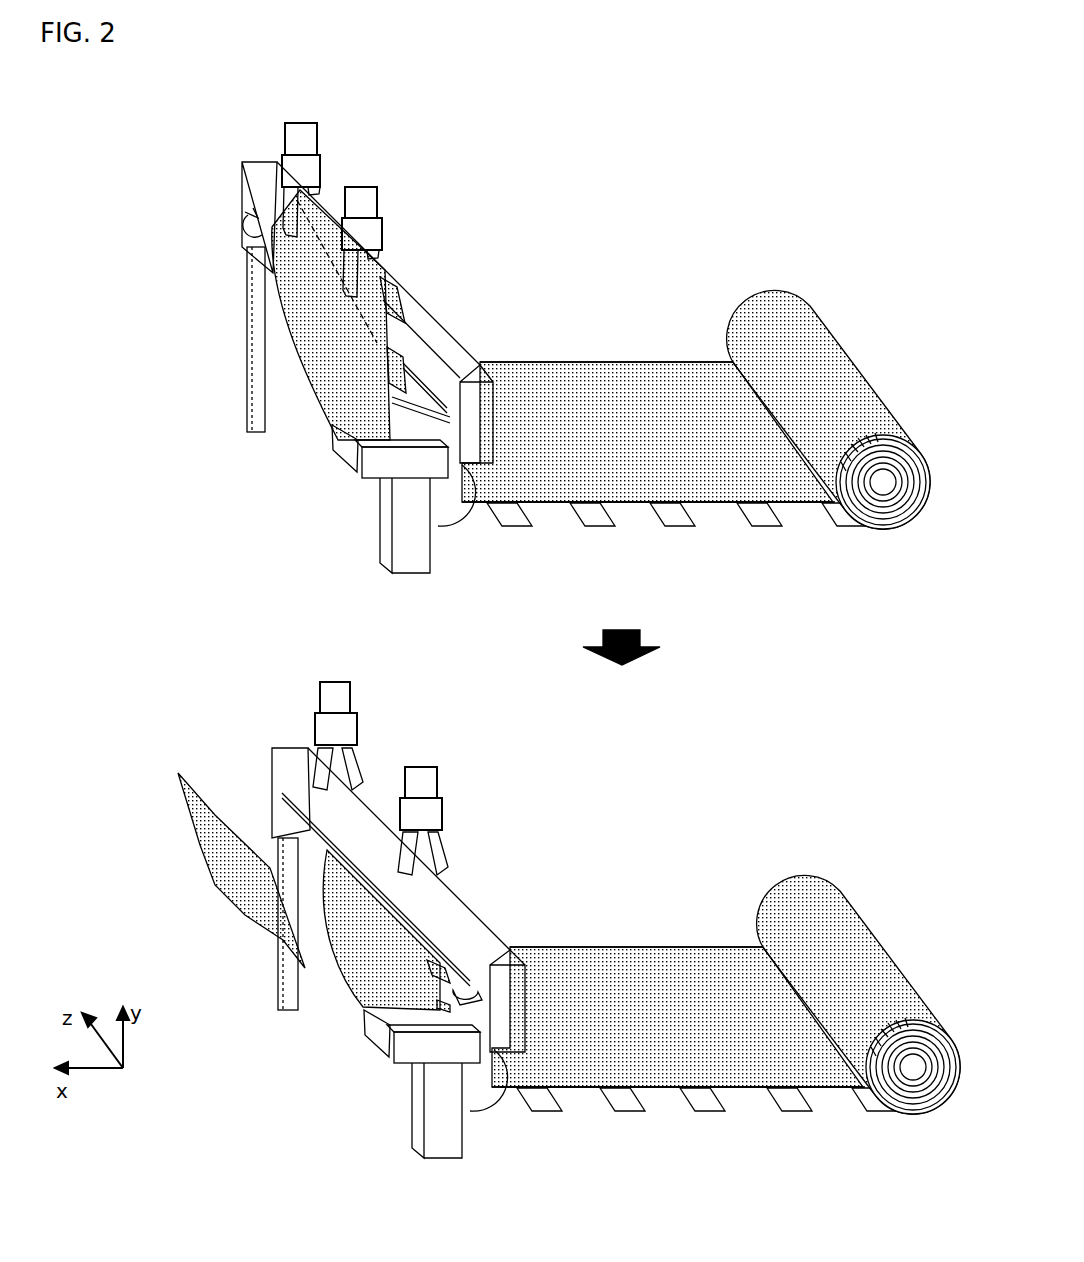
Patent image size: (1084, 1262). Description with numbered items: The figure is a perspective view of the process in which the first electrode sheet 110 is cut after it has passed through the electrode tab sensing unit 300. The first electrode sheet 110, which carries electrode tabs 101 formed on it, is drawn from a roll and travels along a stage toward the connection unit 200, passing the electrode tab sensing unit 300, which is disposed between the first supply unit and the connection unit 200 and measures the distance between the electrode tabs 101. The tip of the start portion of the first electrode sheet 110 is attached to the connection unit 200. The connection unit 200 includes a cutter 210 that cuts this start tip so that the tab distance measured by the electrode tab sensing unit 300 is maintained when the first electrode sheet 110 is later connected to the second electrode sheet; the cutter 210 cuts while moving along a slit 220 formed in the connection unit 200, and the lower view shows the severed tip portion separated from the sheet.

The electrode tab 101 is at (685, 528).
The first electrode sheet 110 is at (317, 353).
The connection unit 200 is at (450, 307).
The cutter 210 is at (245, 220).
The slit 220 is at (450, 418).
The electrode tab sensing unit 300 is at (367, 535).